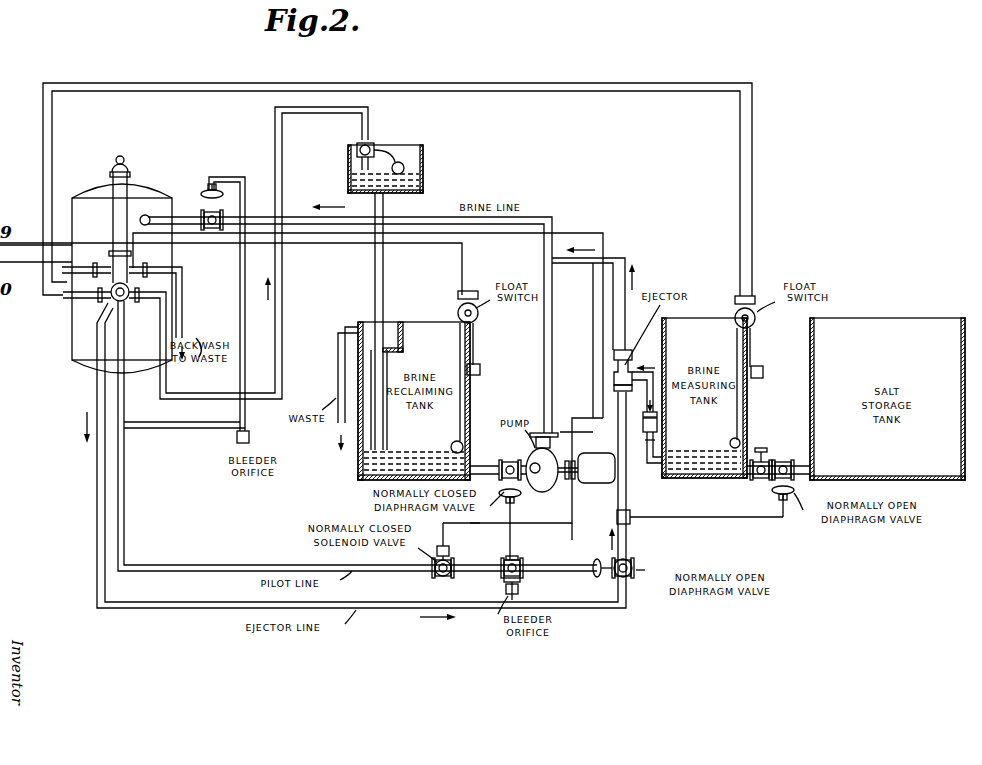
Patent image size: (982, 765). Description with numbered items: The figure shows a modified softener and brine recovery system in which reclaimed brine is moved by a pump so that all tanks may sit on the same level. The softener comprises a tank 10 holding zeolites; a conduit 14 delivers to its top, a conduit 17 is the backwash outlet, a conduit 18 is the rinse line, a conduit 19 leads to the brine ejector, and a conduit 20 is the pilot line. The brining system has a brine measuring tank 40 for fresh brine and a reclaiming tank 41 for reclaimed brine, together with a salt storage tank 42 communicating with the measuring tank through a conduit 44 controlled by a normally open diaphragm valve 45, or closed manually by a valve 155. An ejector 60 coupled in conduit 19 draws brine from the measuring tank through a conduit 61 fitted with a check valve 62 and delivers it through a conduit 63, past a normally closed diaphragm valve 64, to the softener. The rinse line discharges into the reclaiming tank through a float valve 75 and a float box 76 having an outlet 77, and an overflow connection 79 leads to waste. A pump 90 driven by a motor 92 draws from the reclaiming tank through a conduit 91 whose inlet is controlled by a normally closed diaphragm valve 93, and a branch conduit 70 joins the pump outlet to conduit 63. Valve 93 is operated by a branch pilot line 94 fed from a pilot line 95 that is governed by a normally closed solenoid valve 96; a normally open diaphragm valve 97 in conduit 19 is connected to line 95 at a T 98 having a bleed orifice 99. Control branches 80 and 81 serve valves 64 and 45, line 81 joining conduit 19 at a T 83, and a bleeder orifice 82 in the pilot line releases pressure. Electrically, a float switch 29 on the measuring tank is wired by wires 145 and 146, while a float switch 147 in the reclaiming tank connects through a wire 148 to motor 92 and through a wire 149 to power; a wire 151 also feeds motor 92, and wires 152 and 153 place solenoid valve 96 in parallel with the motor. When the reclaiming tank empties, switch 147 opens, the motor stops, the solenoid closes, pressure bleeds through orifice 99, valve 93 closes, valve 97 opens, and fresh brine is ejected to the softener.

The tank 10 is at (98, 192).
The conduit 14 is at (122, 190).
The conduit 17 is at (186, 314).
The conduit 18 is at (284, 150).
The conduit 19 is at (97, 395).
The conduit 20 is at (124, 402).
The float switch 29 is at (752, 298).
The tank 40 is at (711, 318).
The tank 41 is at (490, 392).
The salt storage tank 42 is at (948, 320).
The conduit 44 is at (791, 460).
The normally open diaphragm valve 45 is at (772, 490).
The ejector 60 is at (613, 353).
The conduit 61 is at (660, 415).
The check valve 62 is at (656, 432).
The conduit 63 is at (621, 258).
The normally closed diaphragm valve 64 is at (205, 205).
The branch conduit 70 is at (552, 338).
The float valve 75 is at (376, 148).
The float box 76 is at (426, 164).
The outlet 77 is at (383, 205).
The overflow connection 79 is at (338, 376).
The branch 80 is at (240, 265).
The pilot line 81 is at (725, 518).
The bleeder orifice 82 is at (250, 438).
The T 83 is at (632, 505).
The pump 90 is at (538, 490).
The conduit 91 is at (500, 465).
The motor 92 is at (600, 485).
The normally closed diaphragm valve 93 is at (515, 485).
The branch pilot line 94 is at (516, 558).
The pilot line 95 is at (196, 565).
The normally closed solenoid valve 96 is at (440, 577).
The normally open diaphragm valve 97 is at (634, 565).
The T 98 is at (522, 568).
The bleed orifice 99 is at (520, 589).
The wire 145 is at (172, 78).
The wire 146 is at (164, 91).
The float switch 147 is at (478, 312).
The wire 148 is at (523, 393).
The wire 149 is at (458, 268).
The wire 151 is at (327, 238).
The wire 152 is at (488, 525).
The wire 153 is at (572, 530).
The valve 155 is at (762, 448).